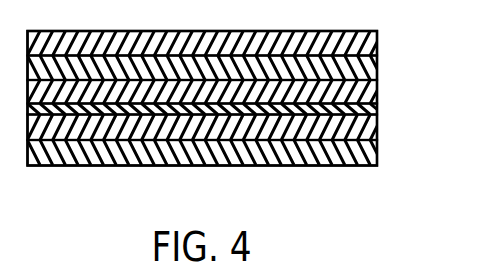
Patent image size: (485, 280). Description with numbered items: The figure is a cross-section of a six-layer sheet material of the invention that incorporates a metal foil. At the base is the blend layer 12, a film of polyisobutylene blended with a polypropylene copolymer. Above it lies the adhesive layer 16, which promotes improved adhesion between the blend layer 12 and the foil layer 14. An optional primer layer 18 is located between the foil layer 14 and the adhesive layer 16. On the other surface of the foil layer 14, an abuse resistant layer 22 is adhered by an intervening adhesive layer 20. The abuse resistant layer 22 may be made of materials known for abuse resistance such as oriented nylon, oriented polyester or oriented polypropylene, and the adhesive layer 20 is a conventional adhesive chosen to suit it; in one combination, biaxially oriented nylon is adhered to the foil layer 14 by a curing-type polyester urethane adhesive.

The blend layer 12 is at (373, 150).
The foil layer 14 is at (372, 101).
The adhesive layer 16 is at (373, 132).
The primer layer 18 is at (377, 113).
The adhesive layer 20 is at (372, 71).
The abuse resistant layer 22 is at (372, 43).